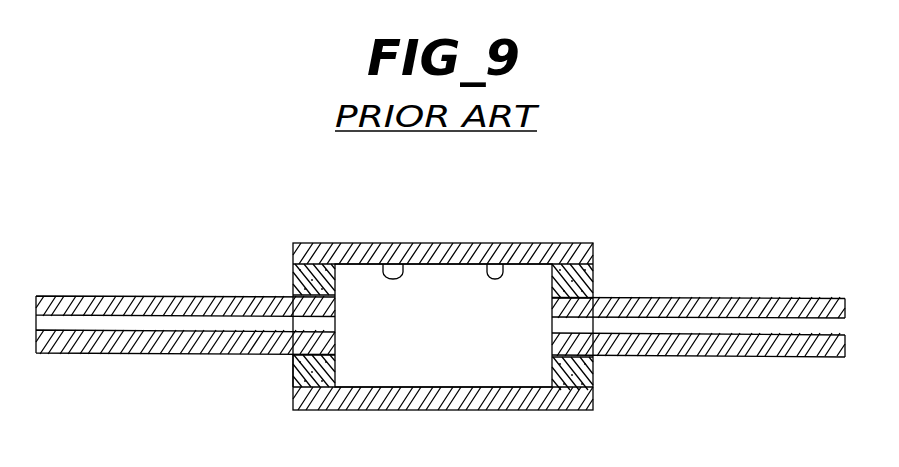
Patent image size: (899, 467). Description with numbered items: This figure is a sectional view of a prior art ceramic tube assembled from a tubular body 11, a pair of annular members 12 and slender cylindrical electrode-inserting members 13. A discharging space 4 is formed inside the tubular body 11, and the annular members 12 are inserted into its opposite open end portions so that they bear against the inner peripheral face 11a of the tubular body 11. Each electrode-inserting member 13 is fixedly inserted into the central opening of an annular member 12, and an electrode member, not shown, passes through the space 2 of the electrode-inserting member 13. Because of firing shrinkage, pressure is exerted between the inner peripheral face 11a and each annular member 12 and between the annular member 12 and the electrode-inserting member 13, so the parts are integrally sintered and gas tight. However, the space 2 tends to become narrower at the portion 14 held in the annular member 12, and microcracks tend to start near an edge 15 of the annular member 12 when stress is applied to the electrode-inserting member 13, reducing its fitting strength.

The space 2 is at (172, 318).
The discharging space 4 is at (385, 264).
The tubular body 11 is at (460, 243).
The inner peripheral face 11a is at (502, 264).
The annular member 12 is at (297, 278).
The electrode-inserting member 13 is at (112, 296).
The portion 14 is at (572, 316).
The edge 15 is at (293, 356).